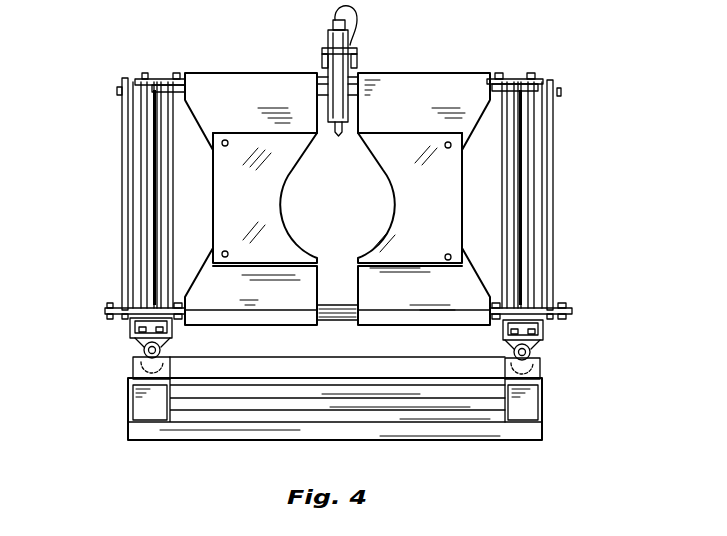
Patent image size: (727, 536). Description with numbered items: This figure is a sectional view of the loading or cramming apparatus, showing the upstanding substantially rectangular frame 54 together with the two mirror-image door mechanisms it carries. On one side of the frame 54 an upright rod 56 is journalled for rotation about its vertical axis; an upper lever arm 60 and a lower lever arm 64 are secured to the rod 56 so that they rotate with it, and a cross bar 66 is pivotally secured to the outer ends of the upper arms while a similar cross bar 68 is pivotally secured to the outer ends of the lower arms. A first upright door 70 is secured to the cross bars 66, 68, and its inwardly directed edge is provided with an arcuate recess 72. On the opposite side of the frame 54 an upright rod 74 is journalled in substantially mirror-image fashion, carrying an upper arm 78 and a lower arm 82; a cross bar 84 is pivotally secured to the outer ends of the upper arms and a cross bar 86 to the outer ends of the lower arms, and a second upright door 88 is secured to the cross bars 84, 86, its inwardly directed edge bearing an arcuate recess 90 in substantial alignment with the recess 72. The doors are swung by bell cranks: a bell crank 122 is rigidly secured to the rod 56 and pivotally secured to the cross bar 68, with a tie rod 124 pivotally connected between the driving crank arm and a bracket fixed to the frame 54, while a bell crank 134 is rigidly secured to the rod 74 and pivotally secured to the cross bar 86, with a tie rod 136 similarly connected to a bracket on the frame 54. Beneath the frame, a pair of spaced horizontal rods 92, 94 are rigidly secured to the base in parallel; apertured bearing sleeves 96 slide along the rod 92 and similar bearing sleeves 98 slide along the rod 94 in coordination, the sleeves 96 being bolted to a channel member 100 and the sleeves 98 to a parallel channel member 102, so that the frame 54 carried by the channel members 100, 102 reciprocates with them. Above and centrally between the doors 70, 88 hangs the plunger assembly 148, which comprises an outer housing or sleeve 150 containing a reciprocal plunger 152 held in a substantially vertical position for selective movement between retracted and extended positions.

The frame 54 is at (133, 77).
The upright rod 56 is at (147, 190).
The upper lever arm 60 is at (163, 82).
The lower lever arm 64 is at (163, 352).
The cross bar 66 is at (187, 73).
The cross bar 68 is at (180, 320).
The first upright door 70 is at (262, 90).
The arcuate recess 72 is at (282, 203).
The upright rod 74 is at (530, 202).
The upper arm 78 is at (512, 82).
The lower arm 82 is at (505, 348).
The cross bar 84 is at (493, 76).
The cross bar 86 is at (495, 322).
The second upright door 88 is at (420, 88).
The right die plate 90 is at (393, 203).
The horizontal rod 92 is at (135, 357).
The horizontal rod 94 is at (537, 357).
The bearing sleeve 96 is at (140, 350).
The bearing sleeve 98 is at (537, 345).
The channel member 100 is at (130, 342).
The channel member 102 is at (543, 335).
The bell crank 122 is at (103, 311).
The tie rod 124 is at (125, 128).
The bell crank 134 is at (527, 310).
The tie rod 136 is at (552, 137).
The plunger assembly 148 is at (352, 48).
The outer housing 150 is at (337, 88).
The plunger 152 is at (338, 136).